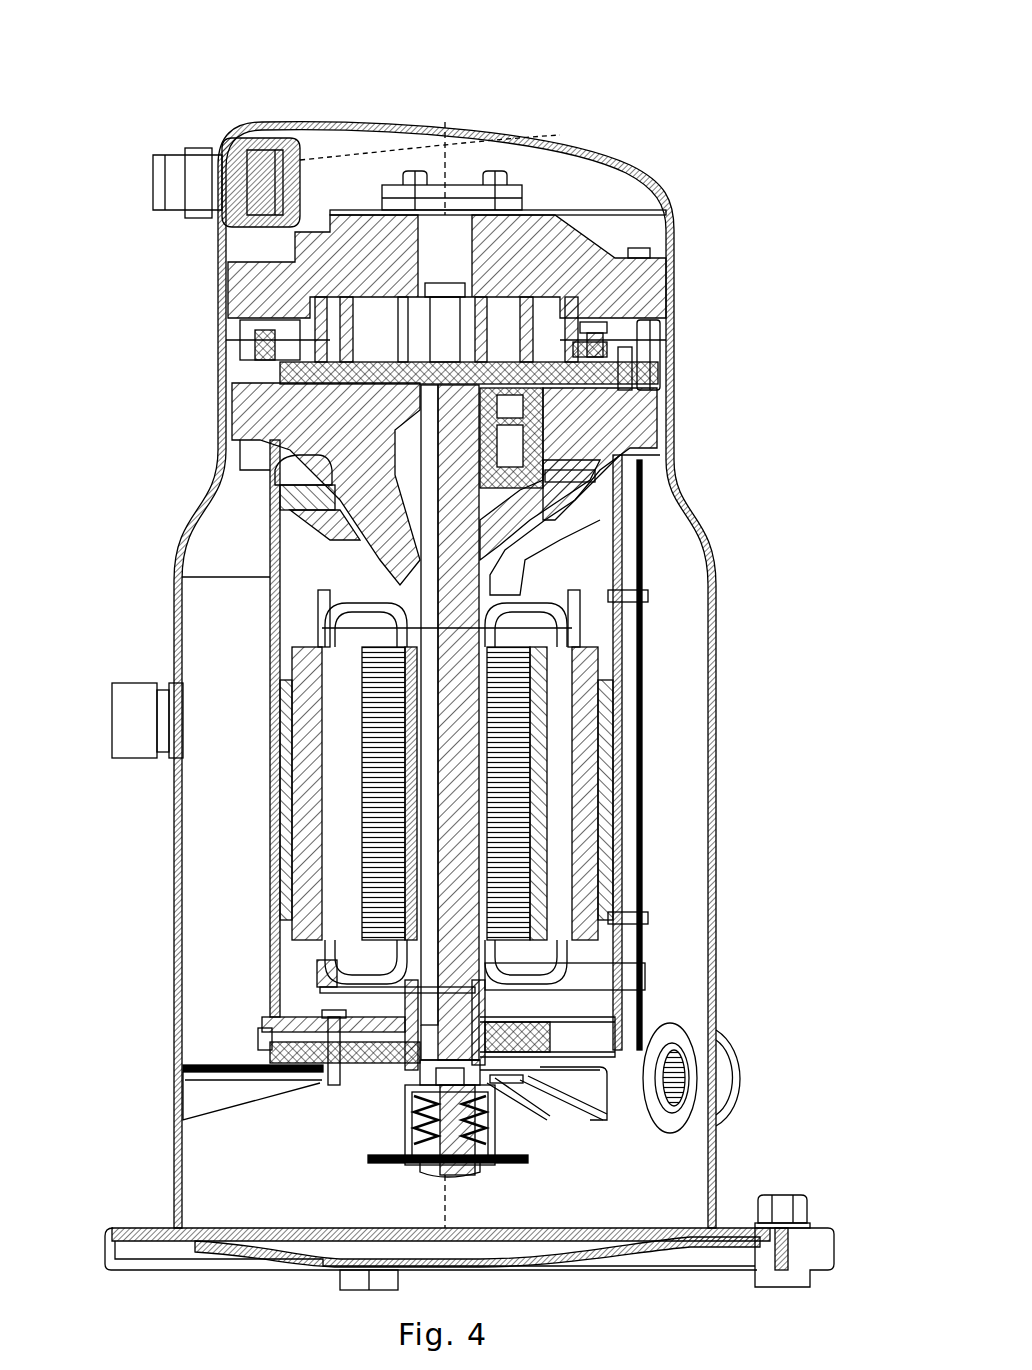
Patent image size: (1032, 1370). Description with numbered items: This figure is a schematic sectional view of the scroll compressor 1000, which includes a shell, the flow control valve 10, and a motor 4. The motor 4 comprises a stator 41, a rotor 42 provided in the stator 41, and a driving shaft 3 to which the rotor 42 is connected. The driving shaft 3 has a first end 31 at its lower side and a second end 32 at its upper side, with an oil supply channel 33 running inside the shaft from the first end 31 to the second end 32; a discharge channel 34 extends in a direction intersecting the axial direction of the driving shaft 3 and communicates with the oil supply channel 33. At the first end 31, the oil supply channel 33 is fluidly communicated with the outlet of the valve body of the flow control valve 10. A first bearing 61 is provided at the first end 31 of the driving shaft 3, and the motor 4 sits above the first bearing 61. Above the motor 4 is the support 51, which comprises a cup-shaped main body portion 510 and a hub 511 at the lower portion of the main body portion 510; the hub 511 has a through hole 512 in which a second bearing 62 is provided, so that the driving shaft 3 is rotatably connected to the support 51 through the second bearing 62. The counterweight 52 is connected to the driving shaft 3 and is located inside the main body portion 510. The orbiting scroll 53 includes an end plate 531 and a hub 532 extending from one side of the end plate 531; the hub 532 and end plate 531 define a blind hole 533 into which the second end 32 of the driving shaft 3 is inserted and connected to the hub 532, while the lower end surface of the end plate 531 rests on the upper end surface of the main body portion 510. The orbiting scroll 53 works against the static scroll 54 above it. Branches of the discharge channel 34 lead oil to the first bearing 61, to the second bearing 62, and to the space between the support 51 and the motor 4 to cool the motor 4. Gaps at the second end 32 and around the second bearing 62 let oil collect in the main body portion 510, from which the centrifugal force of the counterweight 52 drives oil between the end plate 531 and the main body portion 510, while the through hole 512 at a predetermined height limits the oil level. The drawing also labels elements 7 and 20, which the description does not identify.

The scroll compressor 1000 is at (845, 30).
The orbiting scroll 53 is at (535, 300).
The static scroll 54 is at (343, 322).
The second end 32 is at (540, 345).
The end plate 531 is at (520, 372).
The hub 532 is at (545, 395).
The counterweight 52 is at (560, 423).
The blind hole 533 is at (560, 450).
The funnel guide 7 is at (545, 470).
The support 51 is at (245, 400).
The main body portion 510 is at (285, 482).
The through hole 512 is at (295, 508).
The hub 511 is at (325, 511).
The second bearing 62 is at (545, 540).
The discharge channel 34 is at (500, 625).
The driving shaft 3 is at (605, 722).
The oil supply channel 33 is at (430, 716).
The motor 4 is at (354, 776).
The stator 41 is at (330, 705).
The rotor 42 is at (385, 680).
The first bearing 61 is at (540, 1022).
The first end 31 is at (548, 1040).
The lower chamber 20 is at (521, 1136).
The flow control valve 10 is at (400, 1107).